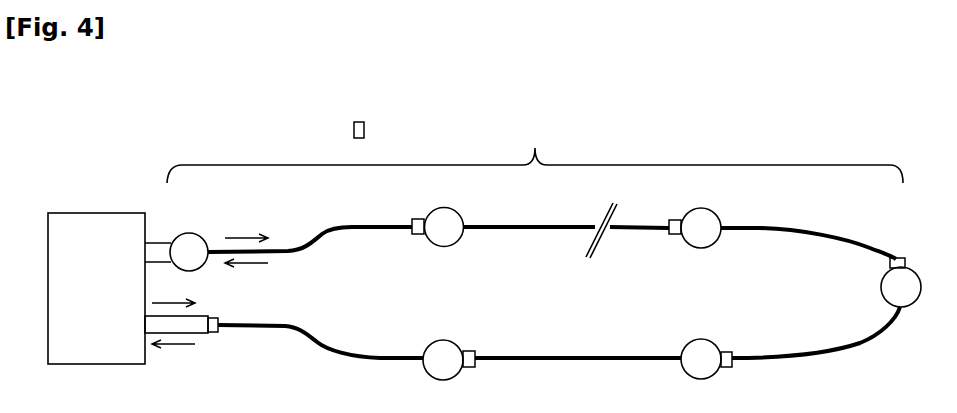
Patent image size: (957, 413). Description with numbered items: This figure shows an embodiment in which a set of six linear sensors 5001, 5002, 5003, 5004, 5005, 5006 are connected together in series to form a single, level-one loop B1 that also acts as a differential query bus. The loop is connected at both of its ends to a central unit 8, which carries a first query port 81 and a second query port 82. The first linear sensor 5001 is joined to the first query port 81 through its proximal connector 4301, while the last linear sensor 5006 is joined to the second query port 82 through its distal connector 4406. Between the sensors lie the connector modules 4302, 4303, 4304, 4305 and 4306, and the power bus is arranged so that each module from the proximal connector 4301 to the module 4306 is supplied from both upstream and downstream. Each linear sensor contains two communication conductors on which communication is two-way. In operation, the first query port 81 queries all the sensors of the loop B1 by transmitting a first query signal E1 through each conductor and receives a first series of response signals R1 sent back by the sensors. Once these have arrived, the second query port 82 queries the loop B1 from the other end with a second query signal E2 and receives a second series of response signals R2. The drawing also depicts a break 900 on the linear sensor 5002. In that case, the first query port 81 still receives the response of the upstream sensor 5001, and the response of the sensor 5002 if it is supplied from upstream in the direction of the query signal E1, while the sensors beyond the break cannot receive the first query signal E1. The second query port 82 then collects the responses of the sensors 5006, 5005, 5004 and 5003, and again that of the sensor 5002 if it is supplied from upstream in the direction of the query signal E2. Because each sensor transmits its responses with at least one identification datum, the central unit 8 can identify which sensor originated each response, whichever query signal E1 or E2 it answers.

The central unit 8 is at (96, 288).
The first query port 81 is at (143, 251).
The second query port 82 is at (162, 322).
The proximal connector 4301 is at (196, 242).
The module 4302 is at (438, 216).
The module 4303 is at (696, 217).
The module 4304 is at (874, 282).
The module 4305 is at (706, 347).
The module 4306 is at (449, 350).
The distal connector 4406 is at (226, 333).
The first linear sensor 5001 is at (310, 228).
The linear sensor 5002 is at (566, 216).
The linear sensor 5003 is at (808, 228).
The linear sensor 5004 is at (816, 344).
The linear sensor 5005 is at (578, 373).
The last linear sensor 5006 is at (320, 352).
The break 900 is at (600, 215).
The loop B1 is at (535, 156).
The first query signal E1 is at (247, 228).
The first series of response signals R1 is at (249, 274).
The second query signal E2 is at (187, 300).
The second series of response signals R2 is at (187, 345).